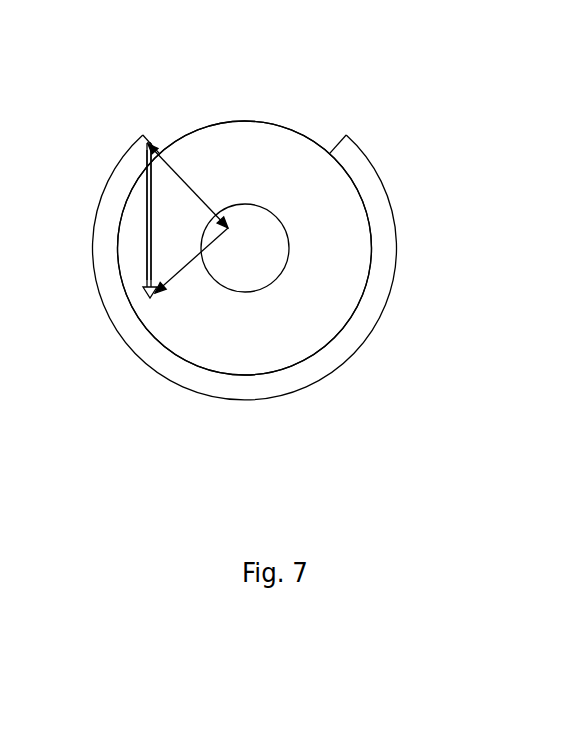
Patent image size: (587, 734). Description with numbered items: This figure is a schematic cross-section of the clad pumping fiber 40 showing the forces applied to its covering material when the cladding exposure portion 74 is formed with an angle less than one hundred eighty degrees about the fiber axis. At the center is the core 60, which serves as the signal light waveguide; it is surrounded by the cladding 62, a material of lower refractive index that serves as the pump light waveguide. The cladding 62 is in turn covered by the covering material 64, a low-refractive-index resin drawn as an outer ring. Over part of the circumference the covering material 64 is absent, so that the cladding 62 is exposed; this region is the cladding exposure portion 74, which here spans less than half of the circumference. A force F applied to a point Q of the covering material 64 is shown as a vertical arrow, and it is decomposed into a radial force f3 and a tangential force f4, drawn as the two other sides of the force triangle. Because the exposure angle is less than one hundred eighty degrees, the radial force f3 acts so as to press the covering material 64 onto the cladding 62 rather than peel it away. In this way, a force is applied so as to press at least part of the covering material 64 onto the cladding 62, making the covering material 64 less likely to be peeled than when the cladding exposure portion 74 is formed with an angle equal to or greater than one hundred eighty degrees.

The clad pumping fiber 40 is at (270, 230).
The core 60 is at (267, 257).
The cladding 62 is at (357, 223).
The covering material 64 is at (290, 383).
The cladding exposure portion 74 is at (268, 122).
The point Q is at (151, 142).
The force F is at (148, 238).
The radial force f3 is at (193, 178).
The tangential force f4 is at (183, 275).